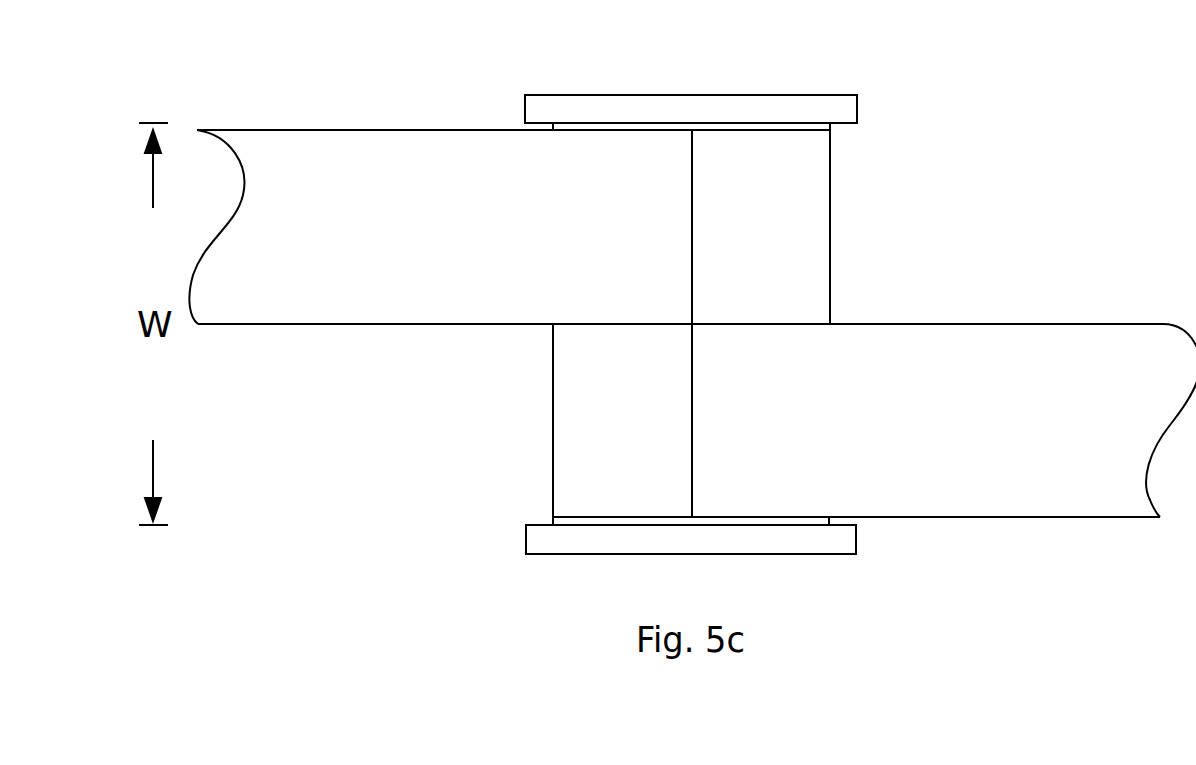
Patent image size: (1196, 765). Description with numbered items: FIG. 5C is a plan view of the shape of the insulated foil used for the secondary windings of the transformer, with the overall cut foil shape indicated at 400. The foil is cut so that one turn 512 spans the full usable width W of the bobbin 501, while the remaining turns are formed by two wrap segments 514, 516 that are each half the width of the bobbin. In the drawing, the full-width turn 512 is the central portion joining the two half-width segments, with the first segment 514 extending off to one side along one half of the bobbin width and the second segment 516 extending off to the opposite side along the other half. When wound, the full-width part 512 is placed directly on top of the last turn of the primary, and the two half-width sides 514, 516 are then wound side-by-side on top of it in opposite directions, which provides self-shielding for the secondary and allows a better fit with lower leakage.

The thermal assembly 400 is at (967, 179).
The bobbin 501 is at (774, 93).
The full-width turn 512 is at (793, 252).
The wrap segment 514 is at (416, 158).
The wrap segment 516 is at (993, 353).